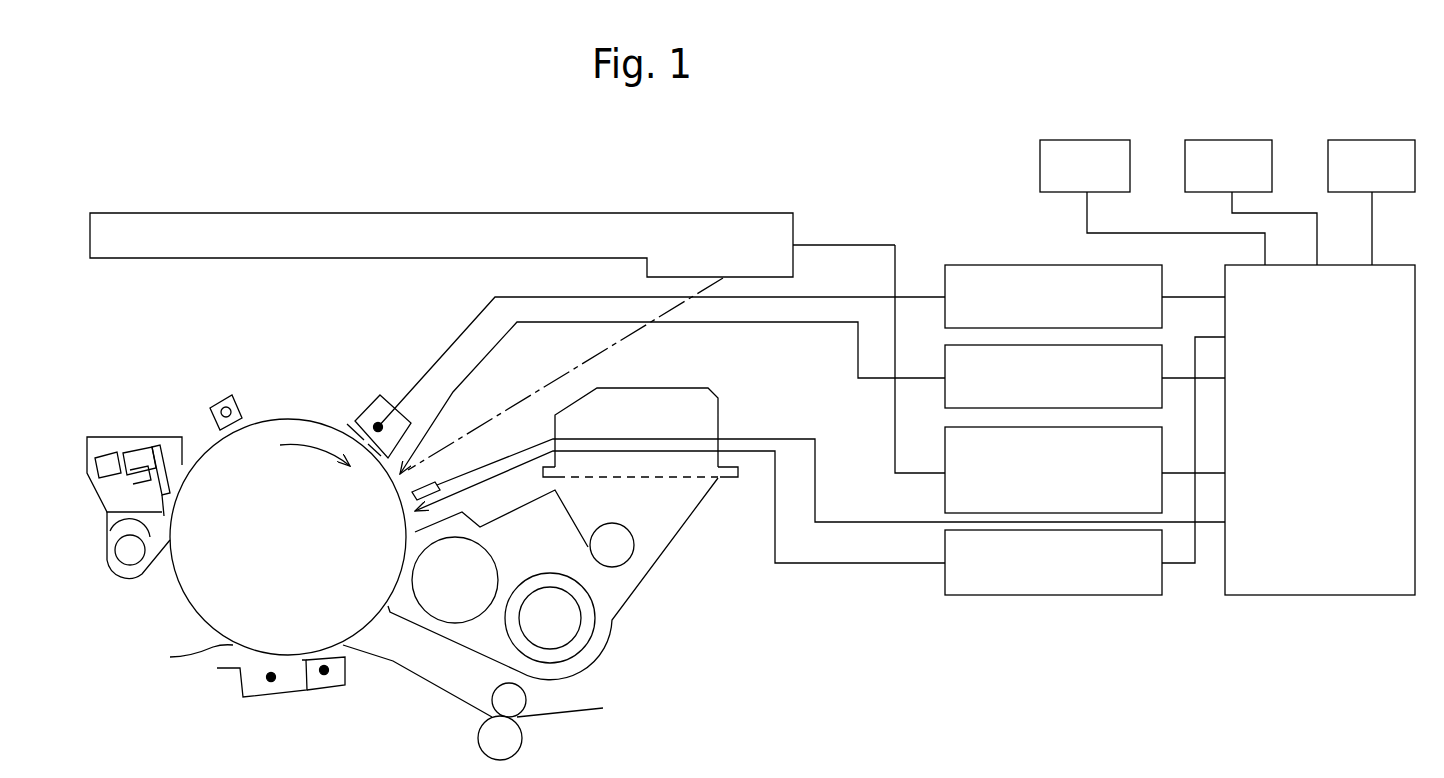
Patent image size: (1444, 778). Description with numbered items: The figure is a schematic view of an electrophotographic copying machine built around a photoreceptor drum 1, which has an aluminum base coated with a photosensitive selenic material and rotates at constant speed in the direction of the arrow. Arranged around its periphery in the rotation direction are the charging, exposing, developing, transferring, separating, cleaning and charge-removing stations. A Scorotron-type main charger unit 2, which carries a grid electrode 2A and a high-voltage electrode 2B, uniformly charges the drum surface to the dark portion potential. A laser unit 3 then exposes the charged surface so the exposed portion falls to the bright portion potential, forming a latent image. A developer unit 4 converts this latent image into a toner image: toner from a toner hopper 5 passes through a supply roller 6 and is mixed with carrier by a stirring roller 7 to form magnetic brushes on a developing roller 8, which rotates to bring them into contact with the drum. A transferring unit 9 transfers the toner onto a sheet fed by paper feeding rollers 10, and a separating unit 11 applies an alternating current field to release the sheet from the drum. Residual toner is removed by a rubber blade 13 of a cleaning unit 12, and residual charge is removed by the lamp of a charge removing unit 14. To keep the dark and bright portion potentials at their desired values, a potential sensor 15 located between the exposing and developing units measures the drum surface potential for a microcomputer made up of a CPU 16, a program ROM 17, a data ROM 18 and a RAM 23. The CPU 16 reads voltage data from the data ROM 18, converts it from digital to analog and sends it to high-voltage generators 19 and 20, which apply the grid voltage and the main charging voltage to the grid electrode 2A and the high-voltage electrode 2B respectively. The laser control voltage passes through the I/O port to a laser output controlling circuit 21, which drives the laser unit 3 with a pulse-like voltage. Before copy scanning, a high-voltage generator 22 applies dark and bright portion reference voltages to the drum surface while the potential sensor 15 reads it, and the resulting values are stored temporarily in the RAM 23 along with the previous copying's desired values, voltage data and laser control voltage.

The photoreceptor drum 1 is at (202, 592).
The main charger unit 2 is at (392, 395).
The grid electrode 2A is at (345, 425).
The high-voltage electrode 2B is at (357, 420).
The laser unit 3 is at (508, 228).
The developer unit 4 is at (620, 617).
The toner hopper 5 is at (693, 413).
The supply roller 6 is at (617, 555).
The stirring roller 7 is at (578, 648).
The developing roller 8 is at (443, 597).
The transferring unit 9 is at (337, 675).
The paper feeding rollers 10 is at (490, 740).
The separating unit 11 is at (280, 682).
The cleaning unit 12 is at (122, 435).
The blade 13 is at (107, 512).
The charge removing unit 14 is at (214, 400).
The potential sensor 15 is at (438, 486).
The central processing unit 16 is at (1300, 578).
The read only memory 17 is at (1063, 147).
The ROM 18 is at (1222, 147).
The high-voltage generator 19 is at (953, 352).
The high-voltage generator 20 is at (963, 265).
The laser output controlling circuit 21 is at (953, 443).
The high-voltage generator 22 is at (955, 578).
The random access memory 23 is at (1362, 147).